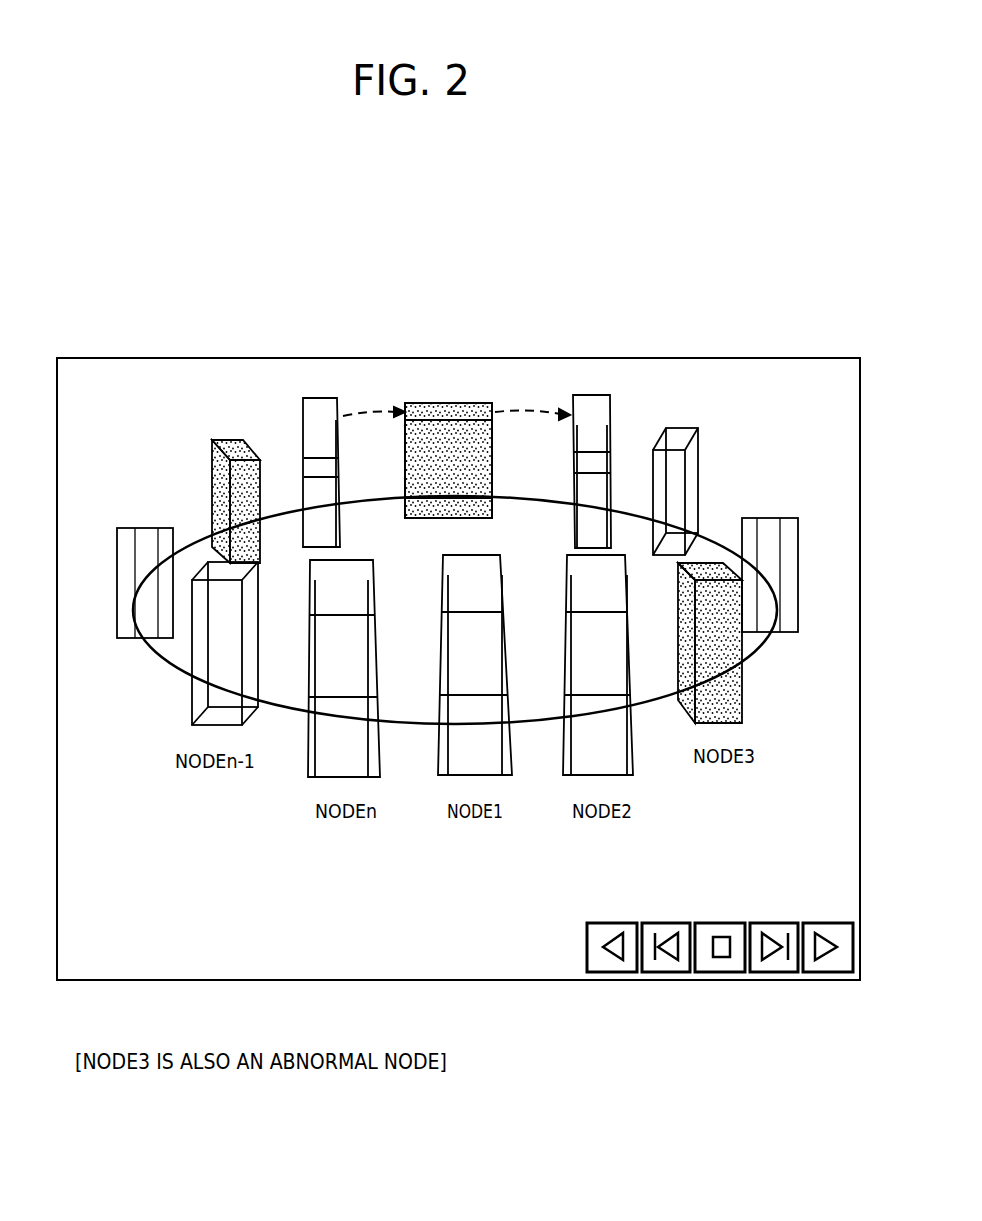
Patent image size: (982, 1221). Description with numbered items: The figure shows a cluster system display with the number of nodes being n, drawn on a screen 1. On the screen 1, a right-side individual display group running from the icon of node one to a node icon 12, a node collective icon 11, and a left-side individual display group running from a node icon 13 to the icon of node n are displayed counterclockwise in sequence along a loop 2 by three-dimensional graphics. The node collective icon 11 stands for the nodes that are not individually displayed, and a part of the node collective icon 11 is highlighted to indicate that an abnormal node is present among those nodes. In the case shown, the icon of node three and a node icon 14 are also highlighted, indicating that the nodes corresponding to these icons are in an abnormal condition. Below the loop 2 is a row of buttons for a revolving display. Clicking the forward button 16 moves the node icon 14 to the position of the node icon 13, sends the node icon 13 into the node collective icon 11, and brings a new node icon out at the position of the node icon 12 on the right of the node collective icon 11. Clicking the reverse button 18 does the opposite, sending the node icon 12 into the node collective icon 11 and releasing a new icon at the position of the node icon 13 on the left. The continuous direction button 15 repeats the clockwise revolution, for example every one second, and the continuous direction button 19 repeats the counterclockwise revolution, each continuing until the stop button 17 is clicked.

The screen 1 is at (113, 344).
The loop 2 is at (722, 540).
The node collective icon 11 is at (450, 405).
The node icon 12 is at (593, 408).
The node icon 13 is at (315, 412).
The node icon 14 is at (232, 438).
The continuous direction button 15 is at (610, 965).
The forward button 16 is at (667, 965).
The stop button 17 is at (722, 965).
The reverse button 18 is at (774, 965).
The continuous direction button 19 is at (838, 960).